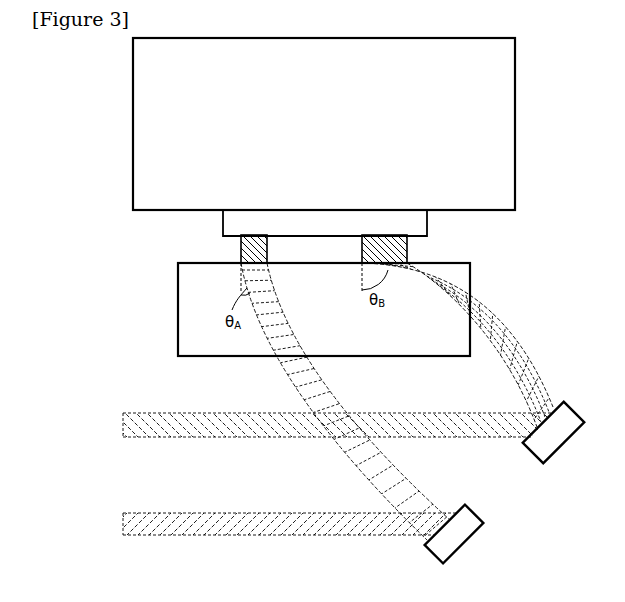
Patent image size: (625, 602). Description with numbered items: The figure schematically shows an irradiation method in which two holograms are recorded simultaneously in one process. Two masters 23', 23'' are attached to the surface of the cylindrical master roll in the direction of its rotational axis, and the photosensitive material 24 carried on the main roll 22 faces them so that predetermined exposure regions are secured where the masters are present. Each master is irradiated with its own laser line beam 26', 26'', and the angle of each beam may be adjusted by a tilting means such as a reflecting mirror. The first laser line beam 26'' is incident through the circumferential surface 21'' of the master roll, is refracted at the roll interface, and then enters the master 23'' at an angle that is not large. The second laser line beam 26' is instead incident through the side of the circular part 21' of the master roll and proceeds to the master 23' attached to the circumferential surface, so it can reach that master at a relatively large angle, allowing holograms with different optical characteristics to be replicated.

The main roll 22 is at (515, 122).
The photosensitive material 24 is at (427, 222).
The master 23' is at (169, 250).
The master 23'' is at (274, 211).
The master roll 21' is at (354, 309).
The master roll 21'' is at (324, 376).
The laser line beam 26' is at (323, 433).
The laser line beam 26'' is at (283, 534).